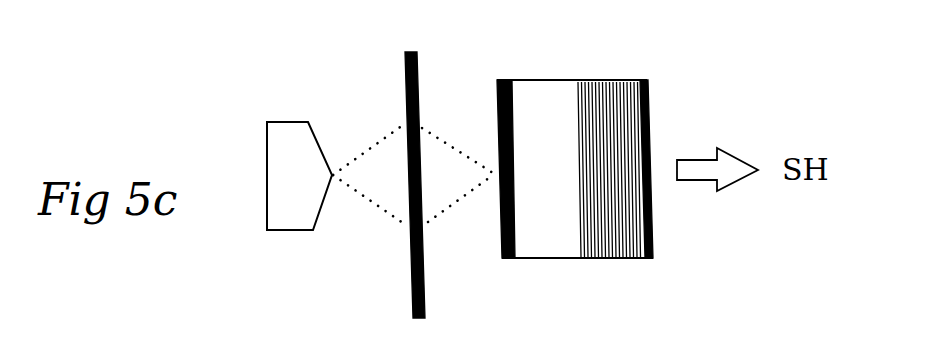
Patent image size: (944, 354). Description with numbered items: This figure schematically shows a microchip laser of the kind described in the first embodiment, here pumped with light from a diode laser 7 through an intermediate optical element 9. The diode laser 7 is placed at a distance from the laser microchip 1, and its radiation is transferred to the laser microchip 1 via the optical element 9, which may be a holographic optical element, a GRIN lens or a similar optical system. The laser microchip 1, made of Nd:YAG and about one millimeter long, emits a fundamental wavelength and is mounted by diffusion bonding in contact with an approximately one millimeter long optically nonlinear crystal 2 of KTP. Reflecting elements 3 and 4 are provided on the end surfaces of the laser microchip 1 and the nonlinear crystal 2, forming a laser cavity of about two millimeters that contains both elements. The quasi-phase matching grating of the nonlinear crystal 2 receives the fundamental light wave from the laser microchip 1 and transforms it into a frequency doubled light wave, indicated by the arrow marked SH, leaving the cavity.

The laser microchip 1 is at (555, 97).
The optically nonlinear crystal 2 is at (620, 88).
The reflecting element 3 is at (498, 102).
The reflecting element 4 is at (647, 110).
The diode laser 7 is at (285, 137).
The optical element 9 is at (407, 82).